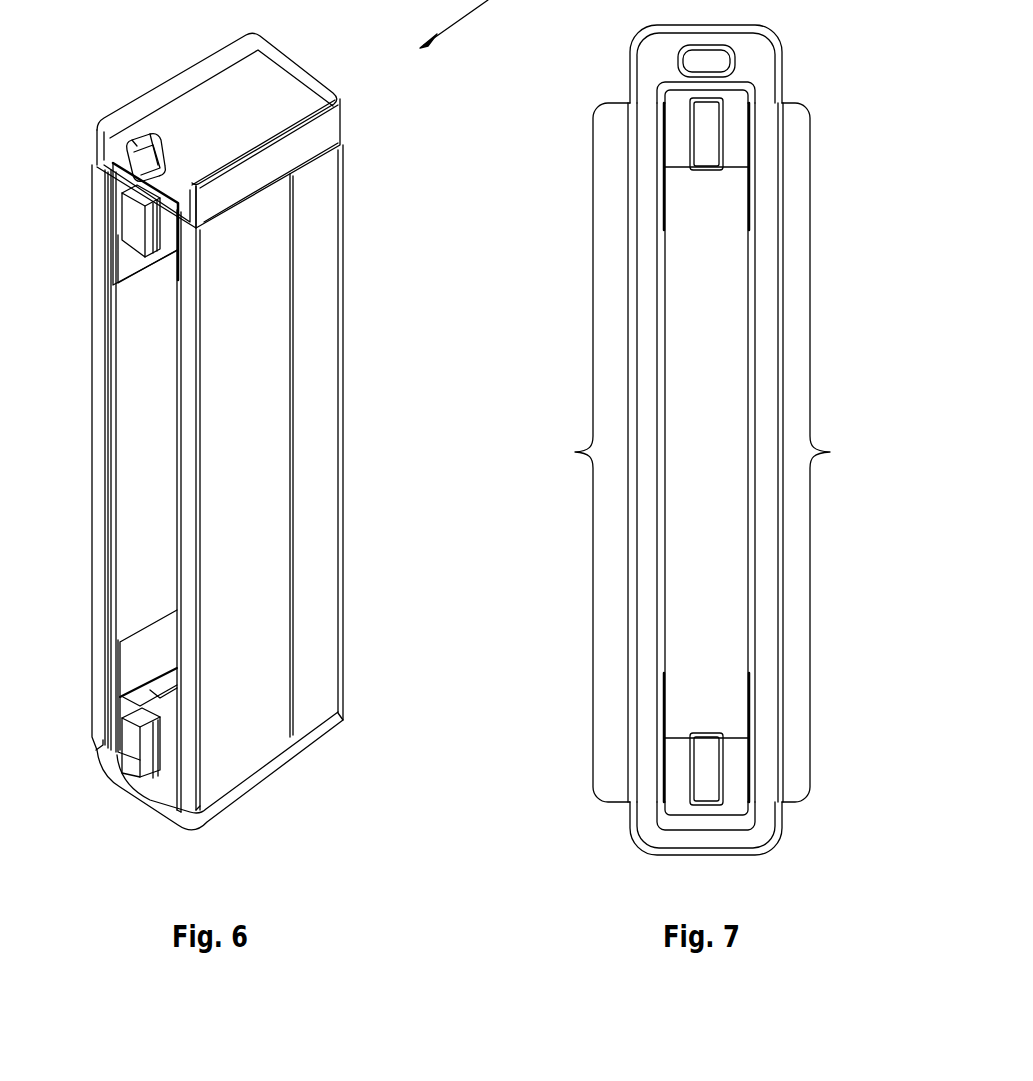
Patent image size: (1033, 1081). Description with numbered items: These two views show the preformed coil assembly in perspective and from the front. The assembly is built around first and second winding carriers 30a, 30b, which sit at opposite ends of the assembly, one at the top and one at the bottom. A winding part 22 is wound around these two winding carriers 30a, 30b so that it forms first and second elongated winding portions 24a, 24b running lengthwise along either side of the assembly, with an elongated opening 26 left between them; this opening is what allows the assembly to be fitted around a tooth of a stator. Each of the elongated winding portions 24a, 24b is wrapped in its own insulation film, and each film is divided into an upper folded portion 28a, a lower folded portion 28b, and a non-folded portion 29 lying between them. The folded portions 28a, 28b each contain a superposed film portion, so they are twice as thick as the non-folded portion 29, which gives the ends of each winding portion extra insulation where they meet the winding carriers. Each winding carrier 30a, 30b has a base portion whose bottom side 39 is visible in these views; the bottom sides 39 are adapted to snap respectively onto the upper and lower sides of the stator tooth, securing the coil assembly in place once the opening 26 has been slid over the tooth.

In FIG. 6, the winding part 22 is at (217, 434).
In FIG. 7, the first elongated winding portion 24a is at (576, 452).
In FIG. 7, the second elongated winding portion 24b is at (832, 452).
In FIG. 6, the elongated opening 26 is at (152, 482).
In FIG. 6, the upper folded portion 28a is at (130, 268).
In FIG. 7, the upper folded portion 28a is at (748, 210).
In FIG. 6, the lower folded portion 28b is at (196, 685).
In FIG. 7, the lower folded portion 28b is at (667, 690).
In FIG. 6, the non-folded portion 29 is at (145, 424).
In FIG. 7, the non-folded portion 29 is at (665, 275).
In FIG. 7, the first winding carrier 30a is at (728, 103).
In FIG. 7, the second winding carrier 30b is at (728, 805).
In FIG. 6, the bottom side 39 is at (132, 697).
In FIG. 7, the bottom side 39 is at (728, 170).